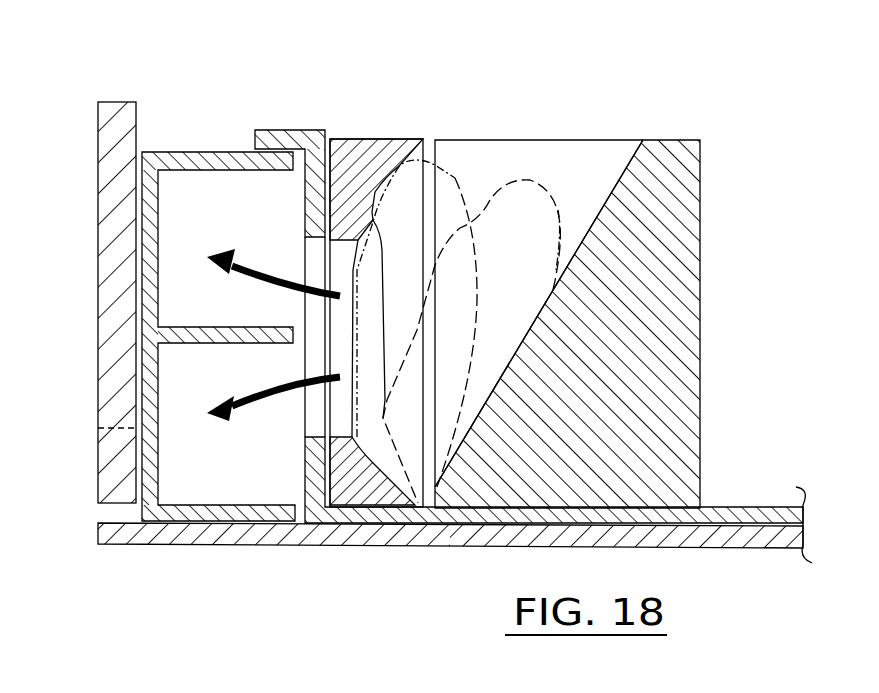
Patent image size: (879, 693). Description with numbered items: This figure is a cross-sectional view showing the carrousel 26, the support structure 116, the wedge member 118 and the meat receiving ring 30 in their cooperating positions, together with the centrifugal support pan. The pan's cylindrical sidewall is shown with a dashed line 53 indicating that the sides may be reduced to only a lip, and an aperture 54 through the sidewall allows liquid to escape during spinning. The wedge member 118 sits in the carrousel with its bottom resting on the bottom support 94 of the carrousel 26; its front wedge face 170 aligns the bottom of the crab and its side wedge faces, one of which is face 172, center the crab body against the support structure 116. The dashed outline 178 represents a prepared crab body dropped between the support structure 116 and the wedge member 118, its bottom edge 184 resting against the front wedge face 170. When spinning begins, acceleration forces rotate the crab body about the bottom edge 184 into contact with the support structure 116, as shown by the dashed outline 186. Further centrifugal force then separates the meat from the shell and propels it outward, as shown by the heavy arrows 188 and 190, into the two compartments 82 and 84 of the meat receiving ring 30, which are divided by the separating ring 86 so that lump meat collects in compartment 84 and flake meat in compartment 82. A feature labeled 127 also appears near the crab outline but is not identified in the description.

The carrousel 26 is at (323, 518).
The meat receiving ring 30 is at (155, 225).
The dashed line 53 is at (122, 430).
The aperture 54 is at (98, 512).
The compartment area 82 is at (185, 188).
The compartment area 84 is at (246, 490).
The separating ring 86 is at (233, 332).
The bottom support 94 is at (758, 510).
The support structure 116 is at (363, 140).
The wedge member 118 is at (673, 155).
The seal lip 127 is at (562, 238).
The front wedge face 170 is at (620, 185).
The side wedge face 172 is at (548, 162).
The dashed outline 178 is at (508, 181).
The bottom edge 184 is at (421, 495).
The dashed outline 186 is at (455, 178).
The heavy arrow 188 is at (267, 272).
The heavy arrow 190 is at (262, 396).